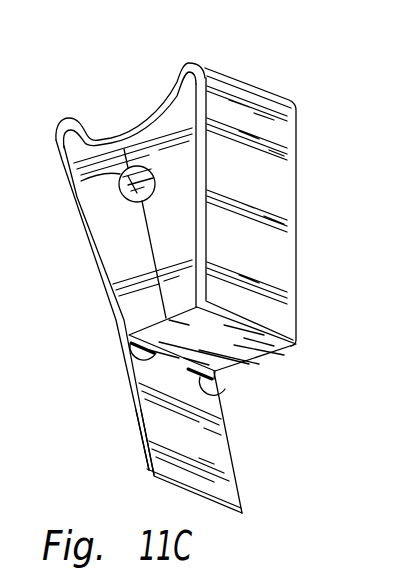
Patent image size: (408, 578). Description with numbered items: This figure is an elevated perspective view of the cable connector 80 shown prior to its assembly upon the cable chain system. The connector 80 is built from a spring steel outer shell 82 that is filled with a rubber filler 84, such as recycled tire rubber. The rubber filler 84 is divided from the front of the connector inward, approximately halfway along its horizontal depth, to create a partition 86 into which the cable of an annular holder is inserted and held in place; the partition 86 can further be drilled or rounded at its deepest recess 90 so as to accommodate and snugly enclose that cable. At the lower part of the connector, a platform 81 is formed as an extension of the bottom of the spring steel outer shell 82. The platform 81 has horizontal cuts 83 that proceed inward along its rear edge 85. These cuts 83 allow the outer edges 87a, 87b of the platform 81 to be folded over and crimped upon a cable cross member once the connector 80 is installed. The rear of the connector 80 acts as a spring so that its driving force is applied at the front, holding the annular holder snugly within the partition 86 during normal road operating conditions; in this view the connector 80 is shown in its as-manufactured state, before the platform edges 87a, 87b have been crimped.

The cable connector 80 is at (140, 97).
The platform 81 is at (193, 442).
The spring steel outer shell 82 is at (280, 193).
The horizontal cuts 83 is at (128, 372).
The rubber filler 84 is at (126, 149).
The rear edge 85 is at (235, 371).
The partition 86 is at (149, 238).
The outer edge 87a is at (235, 442).
The outer edge 87b is at (129, 408).
The deepest recess 90 is at (81, 191).